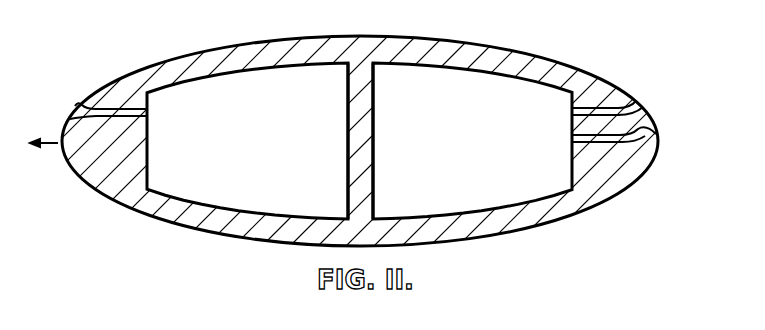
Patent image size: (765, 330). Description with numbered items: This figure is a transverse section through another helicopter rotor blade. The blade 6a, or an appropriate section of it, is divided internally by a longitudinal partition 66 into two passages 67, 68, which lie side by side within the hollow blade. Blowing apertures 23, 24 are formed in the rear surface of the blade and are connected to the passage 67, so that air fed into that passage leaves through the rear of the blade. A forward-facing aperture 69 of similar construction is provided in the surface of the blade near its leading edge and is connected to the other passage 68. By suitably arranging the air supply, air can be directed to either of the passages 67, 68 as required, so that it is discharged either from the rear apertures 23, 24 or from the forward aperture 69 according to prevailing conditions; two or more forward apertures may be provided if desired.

The blade 6a is at (262, 46).
The longitudinal partition 66 is at (367, 100).
The passage 67 is at (477, 157).
The passage 68 is at (268, 157).
The forward-facing aperture 69 is at (73, 107).
The blowing aperture 23 is at (641, 104).
The blowing aperture 24 is at (643, 148).